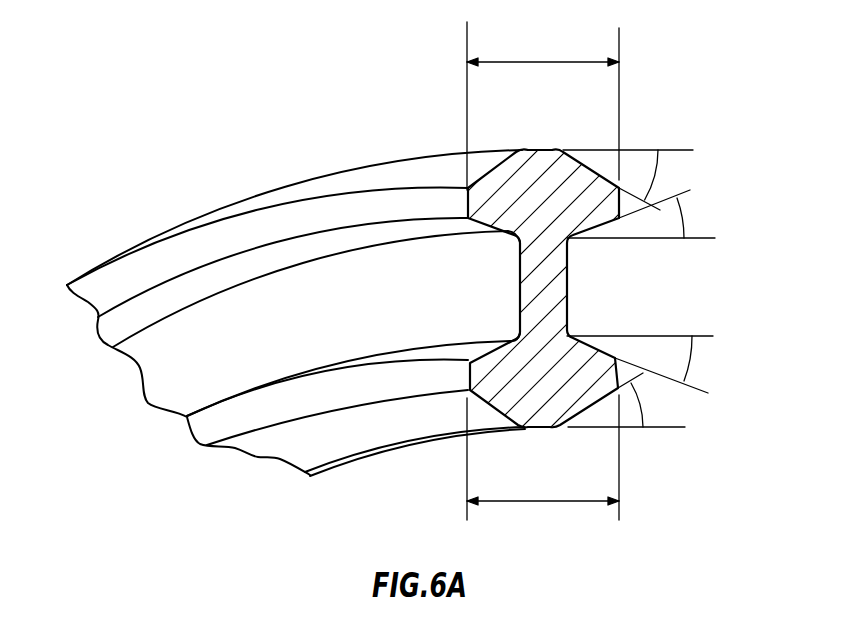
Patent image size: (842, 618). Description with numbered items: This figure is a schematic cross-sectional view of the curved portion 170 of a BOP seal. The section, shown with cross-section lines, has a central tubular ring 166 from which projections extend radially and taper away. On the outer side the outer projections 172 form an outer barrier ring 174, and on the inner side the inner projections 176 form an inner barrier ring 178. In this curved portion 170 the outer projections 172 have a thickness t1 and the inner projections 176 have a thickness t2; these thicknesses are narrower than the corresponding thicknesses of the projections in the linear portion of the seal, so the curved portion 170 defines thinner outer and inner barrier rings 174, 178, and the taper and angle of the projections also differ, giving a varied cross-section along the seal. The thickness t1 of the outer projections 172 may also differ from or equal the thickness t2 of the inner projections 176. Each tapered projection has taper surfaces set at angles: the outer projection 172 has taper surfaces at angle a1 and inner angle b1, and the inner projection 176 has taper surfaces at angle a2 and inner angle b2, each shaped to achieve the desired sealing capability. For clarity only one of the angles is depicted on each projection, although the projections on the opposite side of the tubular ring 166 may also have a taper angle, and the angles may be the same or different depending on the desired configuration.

The tubular ring 166 is at (168, 370).
The curved portion 170 is at (235, 162).
The outer projections 172 is at (593, 202).
The outer barrier ring 174 is at (193, 232).
The inner projections 176 is at (583, 382).
The inner barrier ring 178 is at (283, 443).
The thickness of outer projection t1 is at (575, 60).
The thickness of inner projection t2 is at (557, 502).
The taper angle of outer projection a1 is at (662, 170).
The inner taper angle of outer projection b1 is at (678, 208).
The taper angle of inner projection a2 is at (643, 406).
The inner taper angle of inner projection b2 is at (692, 357).